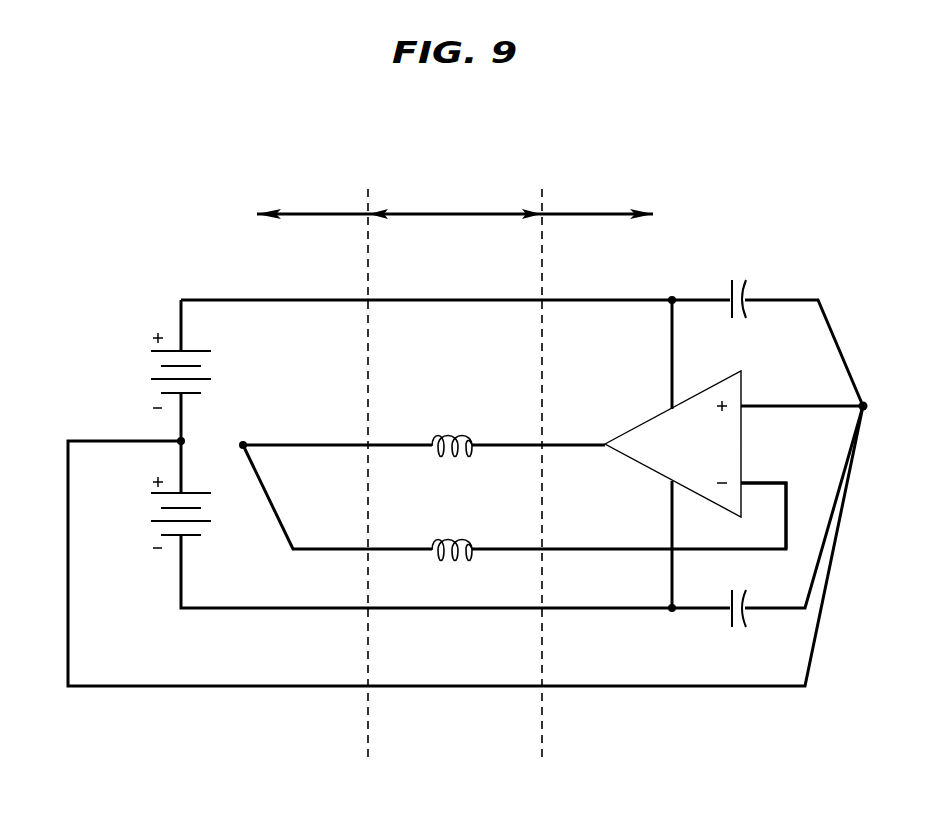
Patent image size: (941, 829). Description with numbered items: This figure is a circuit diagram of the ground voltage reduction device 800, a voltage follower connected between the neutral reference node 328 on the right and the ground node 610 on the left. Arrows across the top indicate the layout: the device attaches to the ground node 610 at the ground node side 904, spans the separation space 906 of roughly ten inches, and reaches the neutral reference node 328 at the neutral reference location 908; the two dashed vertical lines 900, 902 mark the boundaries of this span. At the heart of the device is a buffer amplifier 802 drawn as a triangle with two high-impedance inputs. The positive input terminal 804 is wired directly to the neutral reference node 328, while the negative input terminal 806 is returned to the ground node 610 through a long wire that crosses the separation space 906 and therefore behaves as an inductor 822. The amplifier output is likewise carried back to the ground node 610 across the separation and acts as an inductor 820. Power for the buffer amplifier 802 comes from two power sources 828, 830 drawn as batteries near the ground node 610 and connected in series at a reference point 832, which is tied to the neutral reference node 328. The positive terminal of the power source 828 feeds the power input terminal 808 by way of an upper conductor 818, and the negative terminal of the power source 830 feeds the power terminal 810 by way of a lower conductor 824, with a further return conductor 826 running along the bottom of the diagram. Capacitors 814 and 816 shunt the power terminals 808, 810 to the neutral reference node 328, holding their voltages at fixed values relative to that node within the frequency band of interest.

The neutral reference node 328 is at (868, 406).
The ground node 610 is at (243, 445).
The ground voltage reduction device 800 is at (496, 507).
The buffer amplifier 802 is at (623, 434).
The input terminal 804 is at (750, 404).
The input terminal 806 is at (777, 483).
The power input terminal 808 is at (668, 406).
The power terminal 810 is at (668, 482).
The capacitor 814 is at (742, 286).
The capacitor 816 is at (730, 615).
The conductor 818 is at (472, 298).
The inductor 820 is at (447, 432).
The inductor 822 is at (455, 537).
The conductor 824 is at (470, 607).
The conductor 826 is at (470, 686).
The power source 828 is at (151, 369).
The power source 830 is at (162, 509).
The reference point 832 is at (181, 441).
The boundary 900 is at (368, 722).
The boundary 902 is at (542, 706).
The ground node side 904 is at (322, 212).
The separation space 906 is at (463, 212).
The neutral reference location 908 is at (603, 212).